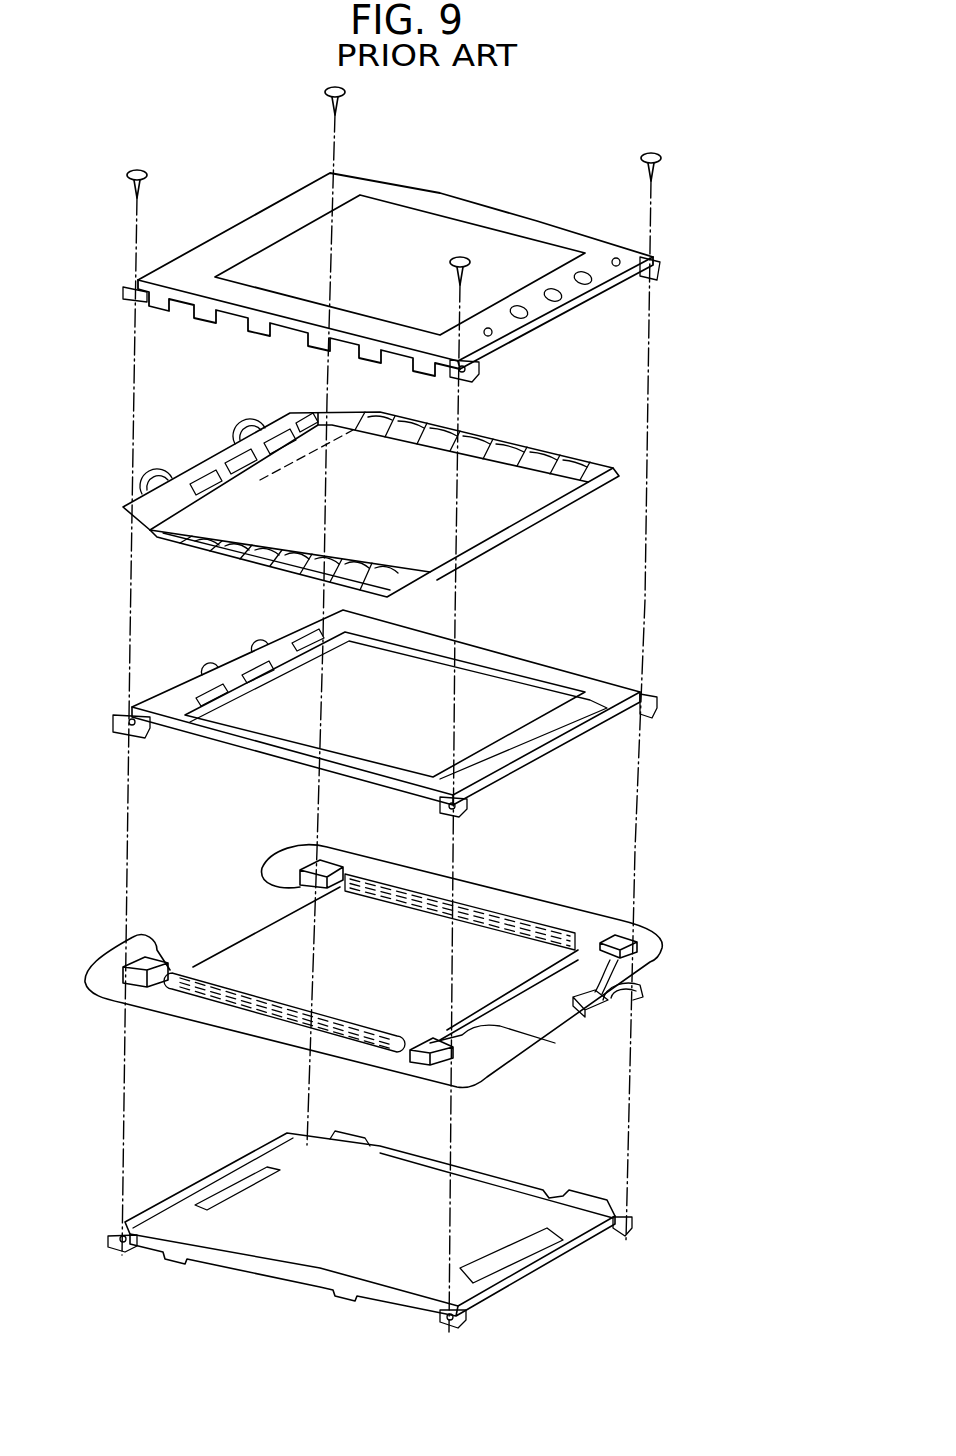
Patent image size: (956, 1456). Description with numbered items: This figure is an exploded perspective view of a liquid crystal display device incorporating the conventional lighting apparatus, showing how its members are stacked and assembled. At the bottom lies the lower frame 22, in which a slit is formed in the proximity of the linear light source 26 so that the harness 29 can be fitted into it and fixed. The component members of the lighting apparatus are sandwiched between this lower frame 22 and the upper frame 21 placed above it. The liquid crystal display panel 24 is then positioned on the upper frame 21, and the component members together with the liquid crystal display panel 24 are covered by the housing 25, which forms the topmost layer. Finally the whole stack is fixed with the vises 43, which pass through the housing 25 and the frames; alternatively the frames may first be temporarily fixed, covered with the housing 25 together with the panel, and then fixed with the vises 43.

The vises 43 is at (342, 93).
The housing 25 is at (514, 215).
The liquid crystal display panel 24 is at (505, 513).
The upper frame 21 is at (540, 757).
The linear light source 26 is at (407, 1042).
The harness 29 is at (480, 1030).
The lower frame 22 is at (463, 1288).